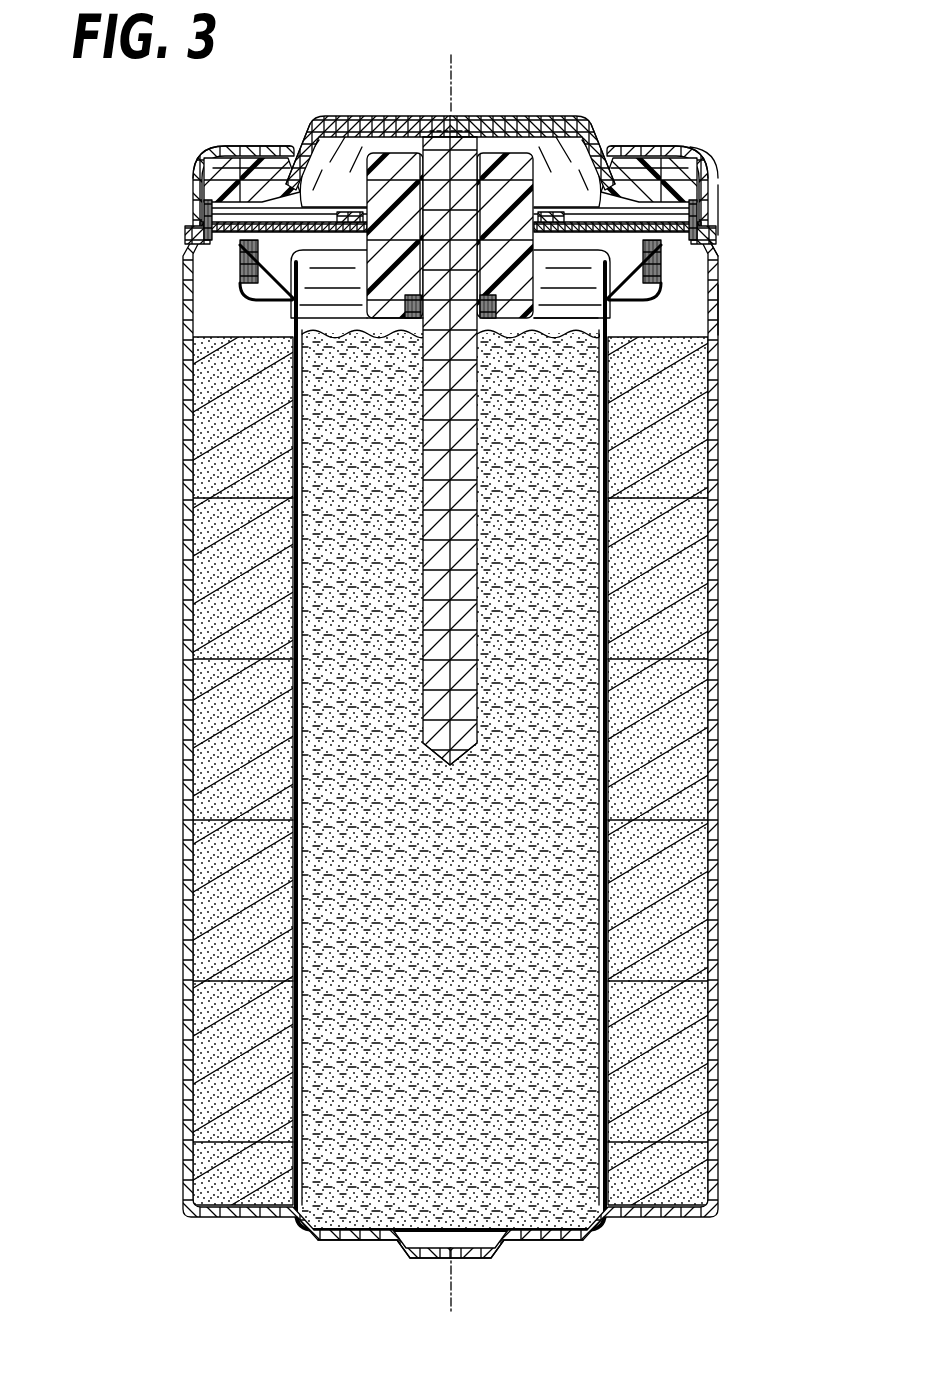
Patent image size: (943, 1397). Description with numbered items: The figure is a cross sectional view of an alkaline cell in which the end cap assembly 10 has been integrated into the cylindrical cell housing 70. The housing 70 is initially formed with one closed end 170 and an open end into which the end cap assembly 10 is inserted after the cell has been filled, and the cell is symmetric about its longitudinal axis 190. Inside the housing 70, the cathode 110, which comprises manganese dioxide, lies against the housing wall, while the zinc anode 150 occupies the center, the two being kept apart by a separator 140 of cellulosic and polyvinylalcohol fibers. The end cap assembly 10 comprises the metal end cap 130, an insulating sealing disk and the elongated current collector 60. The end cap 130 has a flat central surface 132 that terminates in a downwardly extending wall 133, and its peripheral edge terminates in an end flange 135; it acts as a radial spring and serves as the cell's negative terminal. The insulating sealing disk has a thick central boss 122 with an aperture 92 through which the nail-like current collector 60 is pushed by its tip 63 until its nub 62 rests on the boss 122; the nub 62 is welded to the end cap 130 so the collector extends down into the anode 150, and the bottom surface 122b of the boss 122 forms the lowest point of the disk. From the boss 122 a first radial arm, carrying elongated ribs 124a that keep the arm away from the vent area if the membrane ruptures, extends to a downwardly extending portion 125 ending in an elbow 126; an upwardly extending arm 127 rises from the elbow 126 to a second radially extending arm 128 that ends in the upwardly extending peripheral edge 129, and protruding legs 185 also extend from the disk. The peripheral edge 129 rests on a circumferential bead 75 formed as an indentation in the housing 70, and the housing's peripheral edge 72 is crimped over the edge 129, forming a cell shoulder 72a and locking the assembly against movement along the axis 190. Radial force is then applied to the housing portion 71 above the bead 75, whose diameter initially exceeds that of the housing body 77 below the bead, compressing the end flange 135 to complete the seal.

The end cap assembly 10 is at (661, 80).
The current collector 60 is at (405, 150).
The nub 62 is at (490, 147).
The tip 63 is at (455, 768).
The cell housing 70 is at (720, 540).
The housing portion above bead 71 is at (720, 197).
The peripheral edge of housing 72 is at (227, 140).
The cell shoulder 72a is at (715, 177).
The circumferential bead 75 is at (709, 242).
The body of the housing 77 is at (715, 300).
The aperture 92 is at (483, 322).
The cathode 110 is at (672, 1020).
The central boss 122 is at (567, 217).
The bottom surface of boss 122b is at (378, 325).
The ribs 124a is at (290, 185).
The downwardly extending portion of arm 125 is at (605, 338).
The elbow 126 is at (615, 312).
The upwardly extending arm 127 is at (290, 292).
The second radially extending arm 128 is at (217, 233).
The peripheral edge of insulating sealing disk 129 is at (213, 168).
The end cap 130 is at (433, 114).
The flat central surface 132 is at (332, 116).
The downwardly extending wall 133 is at (340, 215).
The end flange 135 is at (210, 197).
The separator 140 is at (318, 1165).
The anode 150 is at (560, 1185).
The closed end of housing 170 is at (360, 1243).
The protruding legs 185 is at (237, 262).
The longitudinal axis 190 is at (455, 70).